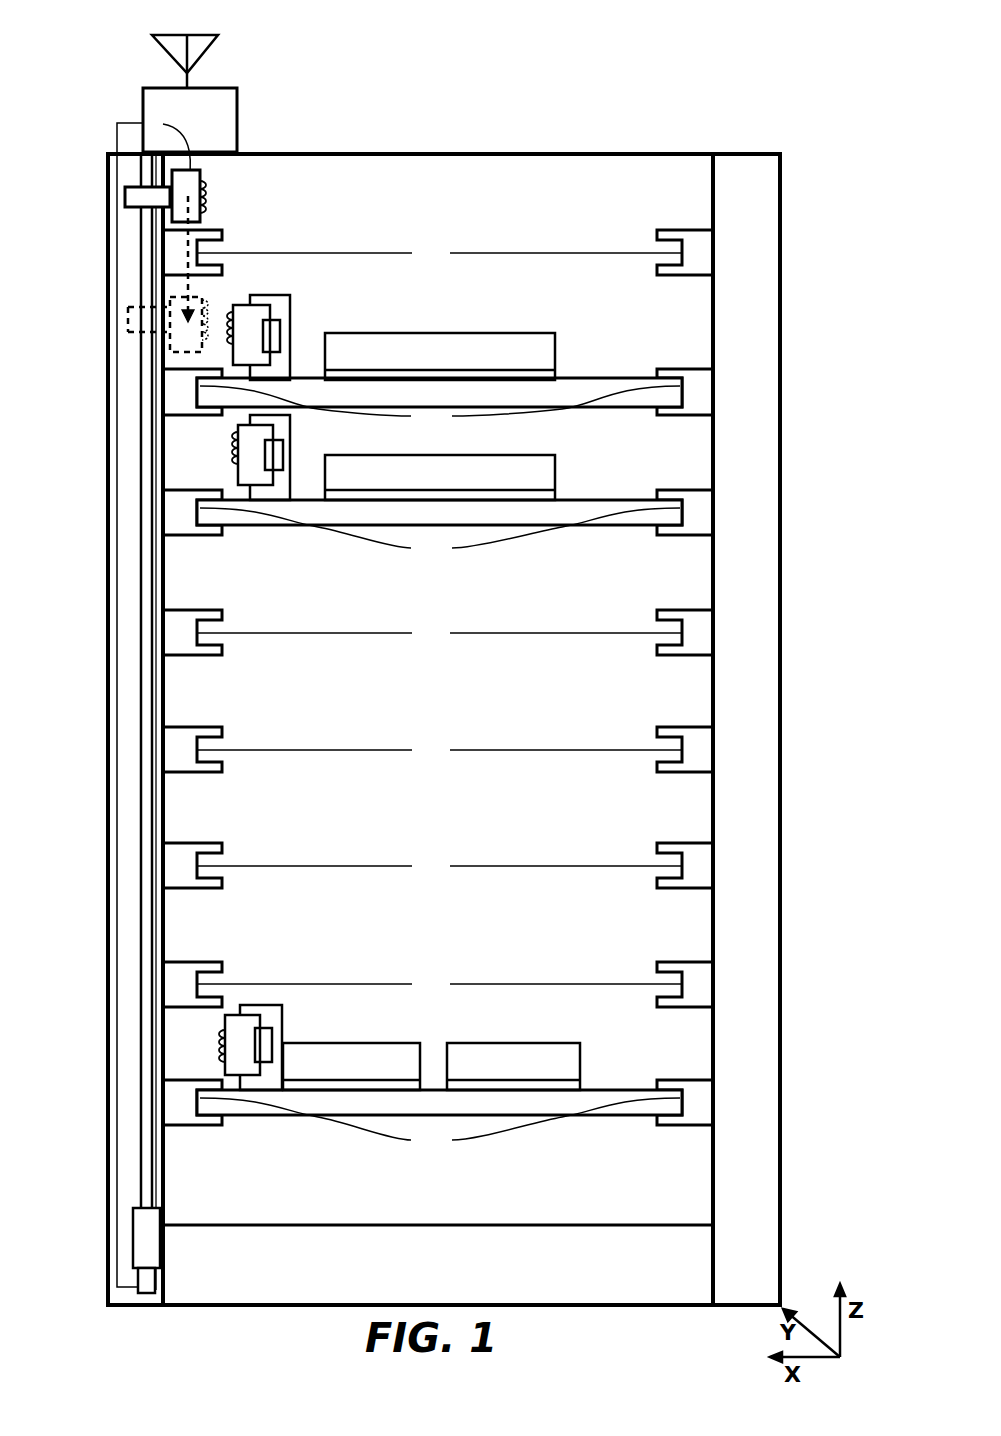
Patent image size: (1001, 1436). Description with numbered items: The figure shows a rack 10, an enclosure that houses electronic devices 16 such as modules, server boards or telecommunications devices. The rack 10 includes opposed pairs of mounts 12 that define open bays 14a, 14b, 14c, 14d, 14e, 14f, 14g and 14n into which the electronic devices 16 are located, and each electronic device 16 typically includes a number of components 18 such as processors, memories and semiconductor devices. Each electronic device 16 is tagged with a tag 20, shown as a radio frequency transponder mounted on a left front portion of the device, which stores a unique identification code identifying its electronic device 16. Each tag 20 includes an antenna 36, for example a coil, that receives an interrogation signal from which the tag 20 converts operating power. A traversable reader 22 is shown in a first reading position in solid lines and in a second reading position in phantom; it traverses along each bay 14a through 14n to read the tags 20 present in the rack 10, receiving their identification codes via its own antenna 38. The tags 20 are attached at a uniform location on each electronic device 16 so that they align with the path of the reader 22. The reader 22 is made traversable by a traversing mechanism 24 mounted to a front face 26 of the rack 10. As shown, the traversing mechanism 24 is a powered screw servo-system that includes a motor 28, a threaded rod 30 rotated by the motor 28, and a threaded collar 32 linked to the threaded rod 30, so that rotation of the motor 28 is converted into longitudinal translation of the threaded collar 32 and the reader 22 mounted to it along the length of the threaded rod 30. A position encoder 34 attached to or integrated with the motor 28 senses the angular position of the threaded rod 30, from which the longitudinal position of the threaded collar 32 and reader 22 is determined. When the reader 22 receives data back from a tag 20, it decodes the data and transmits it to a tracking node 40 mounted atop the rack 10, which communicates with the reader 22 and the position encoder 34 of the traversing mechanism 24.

The rack 10 is at (567, 118).
The mounts 12 is at (712, 1123).
The bay 14a is at (439, 253).
The bay 14b is at (439, 403).
The bay 14c is at (439, 530).
The bay 14d is at (439, 633).
The bay 14e is at (439, 750).
The bay 14f is at (439, 866).
The bay 14g is at (439, 984).
The bay 14n is at (439, 1121).
The electronic device 16 is at (592, 378).
The components 18 is at (524, 1075).
The tag 20 is at (290, 301).
The reader 22 is at (201, 174).
The traversing mechanism 24 is at (122, 1200).
The front face 26 is at (114, 1296).
The motor 28 is at (140, 1228).
The threaded rod 30 is at (147, 1143).
The threaded collar 32 is at (123, 197).
The position encoder 34 is at (146, 1286).
The antenna 36 is at (236, 446).
The antenna 38 is at (213, 196).
The tracking node 40 is at (224, 116).